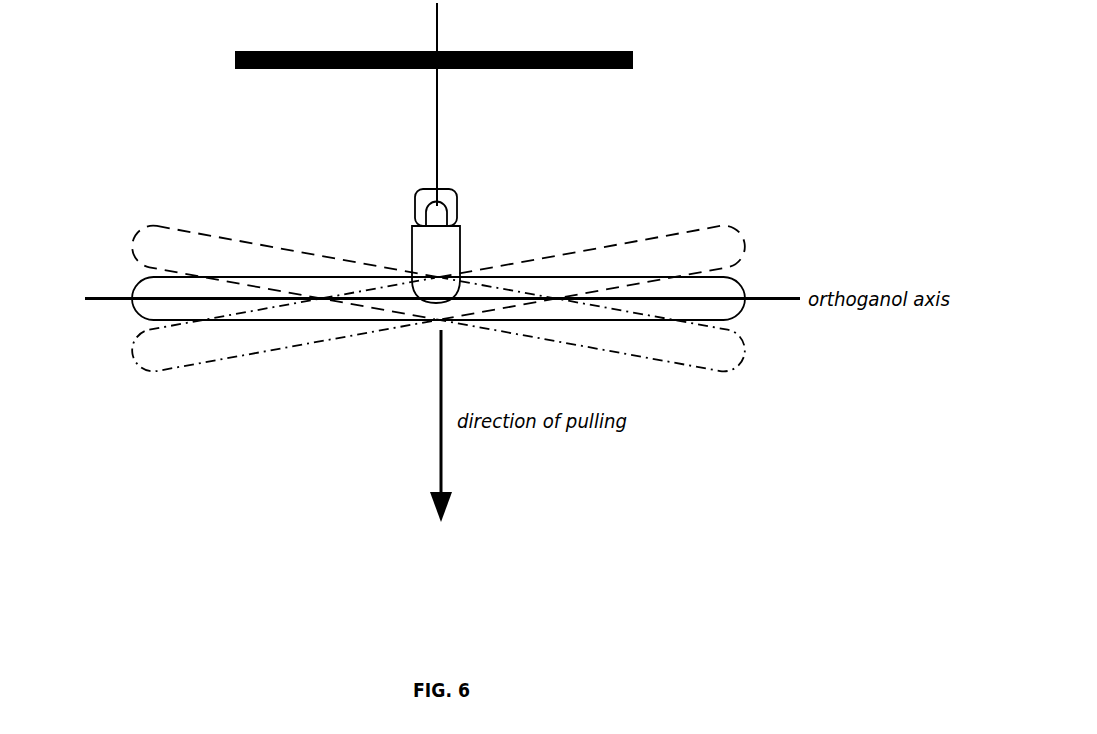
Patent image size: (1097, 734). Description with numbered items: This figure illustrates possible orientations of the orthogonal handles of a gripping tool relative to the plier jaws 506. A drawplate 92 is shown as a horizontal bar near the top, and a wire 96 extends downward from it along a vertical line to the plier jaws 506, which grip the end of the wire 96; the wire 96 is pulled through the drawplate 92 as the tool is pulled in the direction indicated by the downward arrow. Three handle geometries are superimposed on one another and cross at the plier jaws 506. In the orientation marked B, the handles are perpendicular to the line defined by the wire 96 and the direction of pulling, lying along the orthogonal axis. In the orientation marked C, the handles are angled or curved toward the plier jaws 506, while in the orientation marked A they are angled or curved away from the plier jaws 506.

The drawplate 92 is at (628, 52).
The wire 96 is at (437, 127).
The plier jaws 506 is at (443, 199).
The handle orientation angled away from the plier jaws A is at (147, 349).
The handle orientation perpendicular to the wire B is at (150, 287).
The handle orientation angled toward the plier jaws C is at (148, 240).